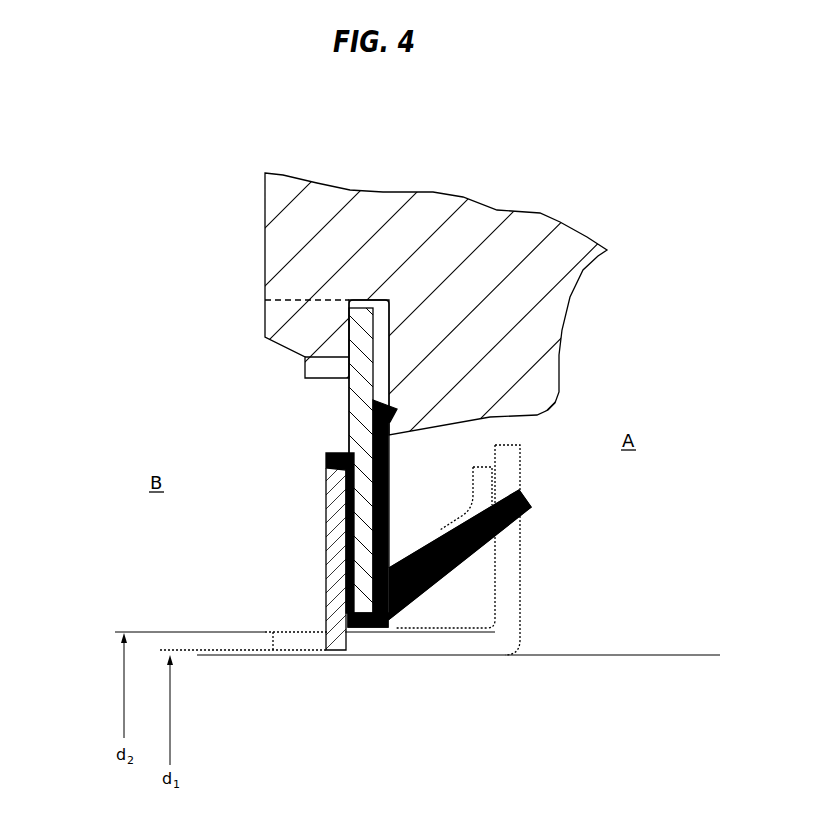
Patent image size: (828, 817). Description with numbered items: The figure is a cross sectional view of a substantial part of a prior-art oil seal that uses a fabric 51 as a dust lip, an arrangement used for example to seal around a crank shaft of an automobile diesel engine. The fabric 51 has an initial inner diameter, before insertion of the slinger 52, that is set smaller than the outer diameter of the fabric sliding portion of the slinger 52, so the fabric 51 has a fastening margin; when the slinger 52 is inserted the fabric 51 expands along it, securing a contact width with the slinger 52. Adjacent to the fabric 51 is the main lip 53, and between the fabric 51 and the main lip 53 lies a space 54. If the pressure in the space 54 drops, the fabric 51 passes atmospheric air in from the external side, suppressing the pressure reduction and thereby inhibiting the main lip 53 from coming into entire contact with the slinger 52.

The fabric 51 is at (327, 592).
The slinger 52 is at (513, 607).
The main lip 53 is at (468, 537).
The space 54 is at (443, 607).